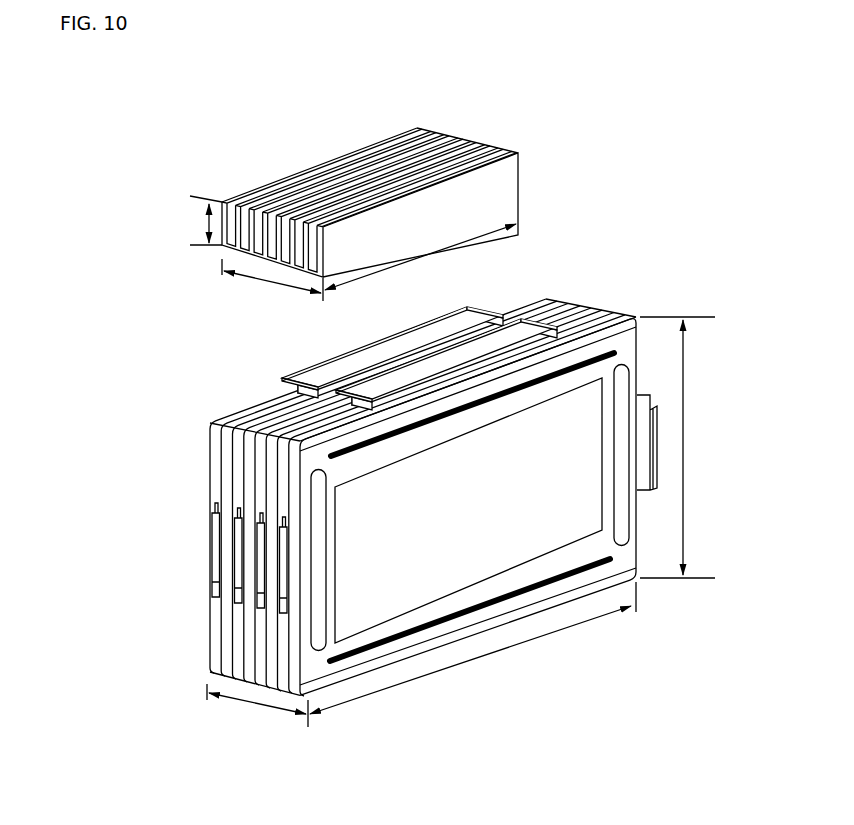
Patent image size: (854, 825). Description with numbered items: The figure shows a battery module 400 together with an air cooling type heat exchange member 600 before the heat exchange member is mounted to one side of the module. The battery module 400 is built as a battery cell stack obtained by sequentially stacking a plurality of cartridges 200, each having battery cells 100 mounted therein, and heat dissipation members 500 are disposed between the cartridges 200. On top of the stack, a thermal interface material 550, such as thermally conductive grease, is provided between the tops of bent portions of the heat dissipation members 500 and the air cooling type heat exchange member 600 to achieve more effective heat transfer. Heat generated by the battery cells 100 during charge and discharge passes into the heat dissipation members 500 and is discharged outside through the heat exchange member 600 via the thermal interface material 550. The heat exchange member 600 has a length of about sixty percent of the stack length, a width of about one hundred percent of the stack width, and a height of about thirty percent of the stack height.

The battery cell 100 is at (588, 531).
The cartridge 200 is at (257, 627).
The battery module 400 is at (188, 377).
The heat dissipation member 500 is at (303, 362).
The thermal interface material 550 is at (566, 329).
The air cooling type heat exchange member 600 is at (264, 178).